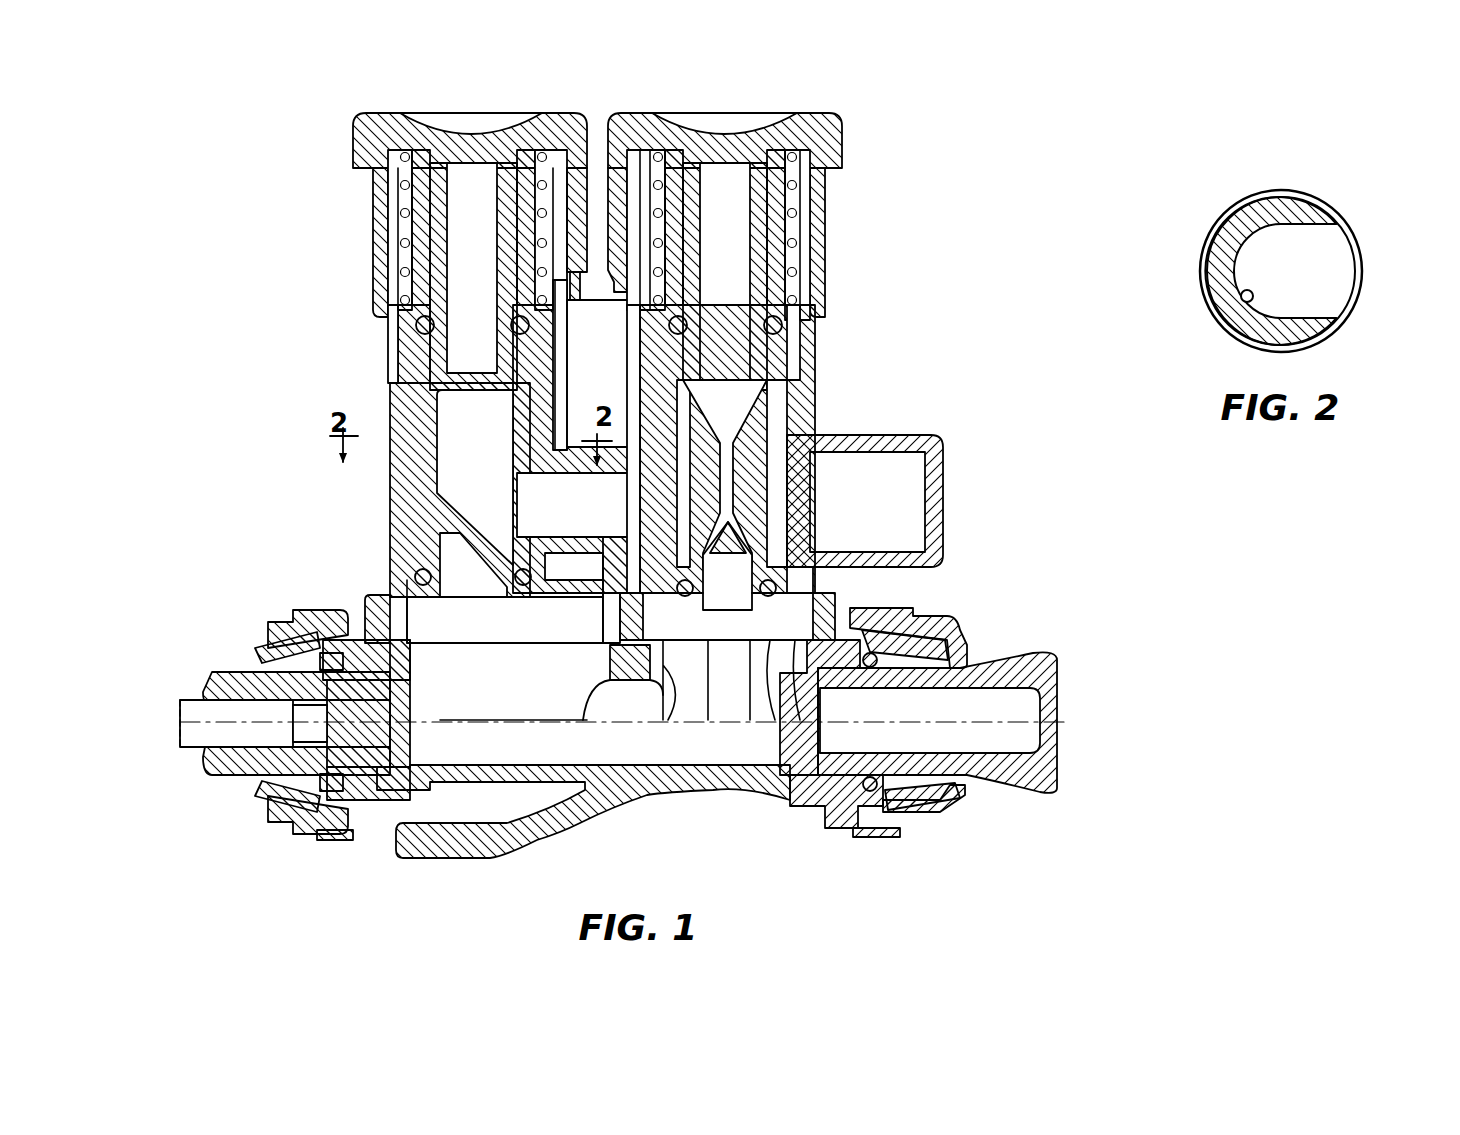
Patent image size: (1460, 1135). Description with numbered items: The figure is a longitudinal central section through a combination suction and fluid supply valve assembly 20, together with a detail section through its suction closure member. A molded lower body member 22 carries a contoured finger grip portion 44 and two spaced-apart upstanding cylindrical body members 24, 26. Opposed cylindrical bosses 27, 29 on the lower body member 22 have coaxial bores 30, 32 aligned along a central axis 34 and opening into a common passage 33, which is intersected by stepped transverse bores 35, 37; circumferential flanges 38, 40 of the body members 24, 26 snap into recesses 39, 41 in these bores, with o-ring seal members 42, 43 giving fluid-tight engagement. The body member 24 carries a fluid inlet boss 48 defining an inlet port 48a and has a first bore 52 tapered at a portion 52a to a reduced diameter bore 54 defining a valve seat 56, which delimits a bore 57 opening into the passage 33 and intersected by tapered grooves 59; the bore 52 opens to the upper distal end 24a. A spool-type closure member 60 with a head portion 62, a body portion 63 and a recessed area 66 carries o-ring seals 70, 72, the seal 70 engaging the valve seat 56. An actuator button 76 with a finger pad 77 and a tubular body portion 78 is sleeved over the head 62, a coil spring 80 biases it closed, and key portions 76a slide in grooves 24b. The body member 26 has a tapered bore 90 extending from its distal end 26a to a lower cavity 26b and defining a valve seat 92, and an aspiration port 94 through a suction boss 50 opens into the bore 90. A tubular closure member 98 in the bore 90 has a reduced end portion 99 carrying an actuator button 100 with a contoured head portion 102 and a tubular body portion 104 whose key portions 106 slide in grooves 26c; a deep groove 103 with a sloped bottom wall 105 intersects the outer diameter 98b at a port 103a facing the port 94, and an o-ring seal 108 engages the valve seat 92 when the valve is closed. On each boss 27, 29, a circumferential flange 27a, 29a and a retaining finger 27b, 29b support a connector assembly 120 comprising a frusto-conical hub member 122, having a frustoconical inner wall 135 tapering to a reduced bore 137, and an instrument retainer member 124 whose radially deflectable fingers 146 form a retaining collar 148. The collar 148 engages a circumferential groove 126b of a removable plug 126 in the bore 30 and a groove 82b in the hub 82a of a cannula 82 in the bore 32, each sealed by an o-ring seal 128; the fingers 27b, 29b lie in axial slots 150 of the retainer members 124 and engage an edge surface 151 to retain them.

In FIG. 1, the valve assembly 20 is at (918, 185).
In FIG. 1, the lower body member 22 is at (715, 792).
In FIG. 1, the body member 24 is at (830, 420).
In FIG. 1, the upper distal end 24a is at (790, 287).
In FIG. 1, the grooves 24b is at (800, 382).
In FIG. 1, the body member 26 is at (368, 396).
In FIG. 1, the upper distal end 26a is at (412, 284).
In FIG. 1, the lower cavity 26b is at (600, 590).
In FIG. 1, the grooves 26c is at (403, 343).
In FIG. 1, the cylindrical boss 27 is at (812, 820).
In FIG. 1, the circumferential flange 27a is at (833, 840).
In FIG. 1, the retaining finger 27b is at (890, 840).
In FIG. 1, the cylindrical boss 29 is at (420, 798).
In FIG. 1, the circumferential flange 29a is at (372, 832).
In FIG. 1, the retaining finger 29b is at (315, 840).
In FIG. 1, the bore 30 is at (840, 688).
In FIG. 1, the bore 32 is at (402, 692).
In FIG. 1, the common passage 33 is at (627, 678).
In FIG. 1, the central axis 34 is at (527, 720).
In FIG. 1, the stepped transverse bore 35 is at (666, 722).
In FIG. 1, the stepped transverse bore 37 is at (412, 662).
In FIG. 1, the circumferential flange 38 is at (840, 605).
In FIG. 1, the circumferential recess 39 is at (742, 692).
In FIG. 1, the circumferential flange 40 is at (380, 600).
In FIG. 1, the circumferential recess 41 is at (582, 630).
In FIG. 1, the o-ring seal member 42 is at (760, 702).
In FIG. 1, the o-ring seal member 43 is at (420, 626).
In FIG. 1, the finger grip portion 44 is at (545, 850).
In FIG. 1, the fluid inlet boss 48 is at (943, 440).
In FIG. 1, the fluid inlet port 48a is at (945, 482).
In FIG. 1, the fluid suction boss 50 is at (592, 447).
In FIG. 1, the first bore 52 is at (800, 402).
In FIG. 1, the tapered portion 52a is at (790, 510).
In FIG. 1, the reduced diameter bore 54 is at (795, 538).
In FIG. 1, the valve seat 56 is at (700, 612).
In FIG. 1, the bore 57 is at (757, 700).
In FIG. 1, the tapered grooves 59 is at (676, 690).
In FIG. 1, the fluid supply valve closure member 60 is at (812, 382).
In FIG. 1, the head portion 62 is at (762, 115).
In FIG. 1, the closure member body portion 63 is at (802, 322).
In FIG. 1, the recessed area 66 is at (806, 482).
In FIG. 1, the o-ring seal 70 is at (716, 590).
In FIG. 1, the o-ring seal 72 is at (420, 328).
In FIG. 1, the actuator button 76 is at (842, 118).
In FIG. 1, the key portions 76a is at (655, 272).
In FIG. 1, the finger pad 77 is at (630, 113).
In FIG. 1, the tubular body portion 78 is at (826, 216).
In FIG. 1, the coil biasing spring 80 is at (540, 152).
In FIG. 1, the cannula 82 is at (208, 690).
In FIG. 1, the cylindrical hub 82a is at (230, 780).
In FIG. 1, the circumferential groove 82b is at (250, 714).
In FIG. 1, the tapered cylindrical bore 90 is at (400, 368).
In FIG. 1, the valve seat 92 is at (516, 643).
In FIG. 1, the fluid suction port 94 is at (545, 488).
In FIG. 1, the tubular closure member 98 is at (556, 362).
In FIG. 2, the tubular closure member 98 is at (1240, 198).
In FIG. 2, the outer diameter 98b is at (1323, 205).
In FIG. 1, the reduced diameter tubular end portion 99 is at (405, 216).
In FIG. 1, the actuator button 100 is at (355, 118).
In FIG. 1, the contoured head portion 102 is at (383, 113).
In FIG. 1, the deep groove 103 is at (445, 440).
In FIG. 2, the deep groove 103 is at (1247, 300).
In FIG. 2, the port 103a is at (1342, 228).
In FIG. 1, the tubular body portion 104 is at (373, 188).
In FIG. 1, the sloped bottom wall 105 is at (448, 520).
In FIG. 1, the key portions 106 is at (395, 252).
In FIG. 1, the o-ring seal 108 is at (420, 575).
In FIG. 1, the connector assembly 120 is at (275, 580).
In FIG. 1, the hub member 122 is at (275, 825).
In FIG. 1, the instrument retainer member 124 is at (275, 615).
In FIG. 1, the plug 126 is at (1060, 682).
In FIG. 1, the circumferential groove 126b is at (958, 595).
In FIG. 1, the o-ring seal 128 is at (377, 752).
In FIG. 1, the frustoconical inner wall 135 is at (255, 645).
In FIG. 1, the reduced diameter bore 137 is at (955, 688).
In FIG. 1, the fingers 146 is at (265, 800).
In FIG. 1, the retaining collar 148 is at (878, 765).
In FIG. 1, the axial slots 150 is at (300, 838).
In FIG. 1, the edge surface 151 is at (350, 838).